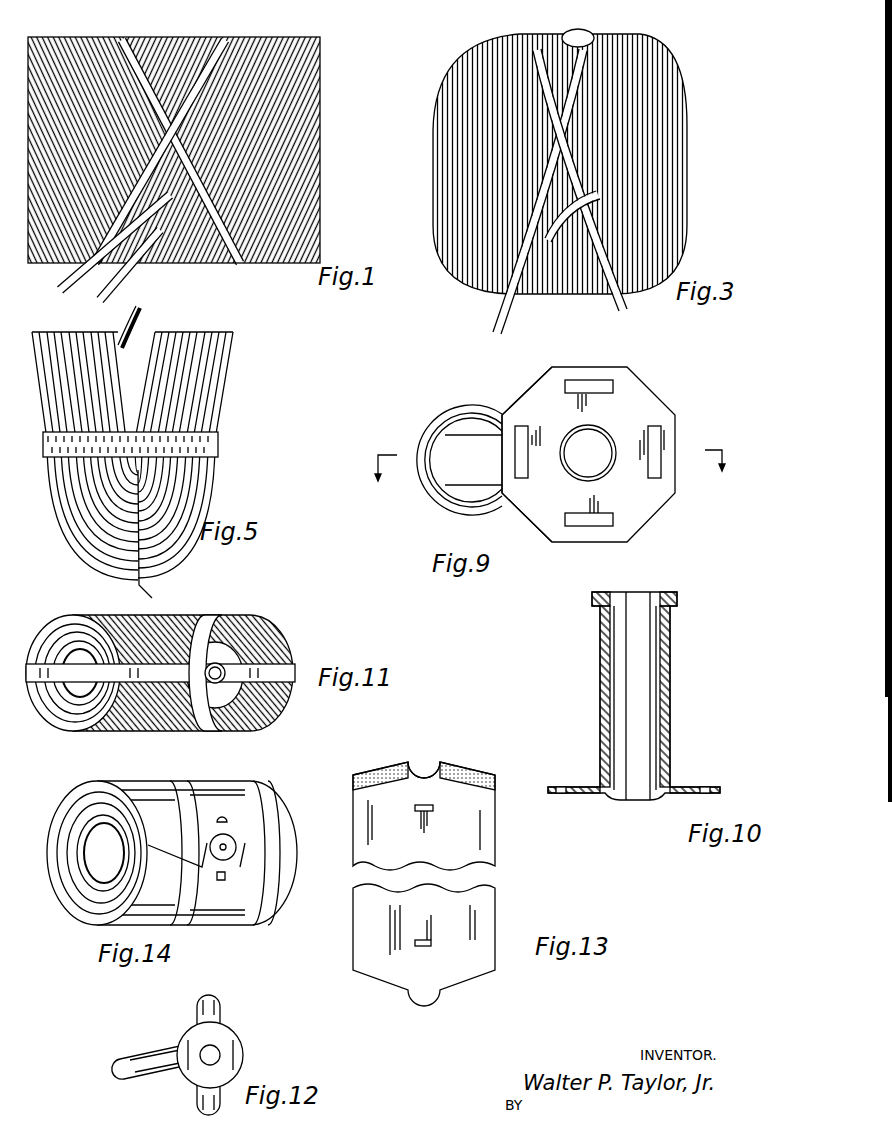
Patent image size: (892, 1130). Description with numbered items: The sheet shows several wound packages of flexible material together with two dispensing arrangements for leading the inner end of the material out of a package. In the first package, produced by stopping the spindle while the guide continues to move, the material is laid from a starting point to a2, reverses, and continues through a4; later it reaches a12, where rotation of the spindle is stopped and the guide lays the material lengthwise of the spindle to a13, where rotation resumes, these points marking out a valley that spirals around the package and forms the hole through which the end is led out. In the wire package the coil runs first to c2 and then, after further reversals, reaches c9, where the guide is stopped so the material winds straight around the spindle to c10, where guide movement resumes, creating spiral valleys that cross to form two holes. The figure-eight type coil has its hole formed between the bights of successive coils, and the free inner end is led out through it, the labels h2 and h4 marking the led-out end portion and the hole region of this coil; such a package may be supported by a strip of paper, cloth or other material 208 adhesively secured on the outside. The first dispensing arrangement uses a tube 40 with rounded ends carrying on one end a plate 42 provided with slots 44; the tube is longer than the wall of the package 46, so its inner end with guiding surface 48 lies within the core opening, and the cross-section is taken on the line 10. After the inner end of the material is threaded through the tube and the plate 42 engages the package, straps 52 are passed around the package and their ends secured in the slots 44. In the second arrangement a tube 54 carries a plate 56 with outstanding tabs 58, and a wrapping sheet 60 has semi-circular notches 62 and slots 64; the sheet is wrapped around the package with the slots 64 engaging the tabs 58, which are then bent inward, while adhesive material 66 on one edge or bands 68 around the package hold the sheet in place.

In FIG. 1, the winding point a12 is at (180, 147).
In FIG. 1, the winding point a13 is at (187, 143).
In FIG. 1, the winding point a2 is at (70, 287).
In FIG. 1, the winding point a4 is at (213, 265).
In FIG. 3, the winding point c2 is at (563, 195).
In FIG. 3, the winding point c9 is at (580, 222).
In FIG. 3, the winding point c10 is at (547, 297).
In FIG. 5, the supporting strip 208 is at (220, 443).
In FIG. 5, the twisted strand end h2 is at (137, 318).
In FIG. 5, the twisted strand end h4 is at (140, 338).
In FIG. 9, the tube 40 is at (490, 500).
In FIG. 10, the tube 40 is at (663, 690).
In FIG. 9, the plate 42 is at (543, 402).
In FIG. 10, the plate 42 is at (580, 795).
In FIG. 9, the slots 44 is at (600, 385).
In FIG. 10, the slots 44 is at (563, 793).
In FIG. 11, the slots 44 is at (175, 622).
In FIG. 10, the guiding surface 48 is at (683, 597).
In FIG. 9, the section line 10 is at (548, 477).
In FIG. 11, the package 46 is at (255, 628).
In FIG. 11, the straps 52 is at (272, 672).
In FIG. 14, the wrapping sheet 60 is at (135, 785).
In FIG. 13, the wrapping sheet 60 is at (478, 800).
In FIG. 14, the bands 68 is at (233, 783).
In FIG. 14, the tabs 58 is at (225, 822).
In FIG. 12, the tabs 58 is at (208, 1005).
In FIG. 14, the plate 56 is at (235, 845).
In FIG. 12, the plate 56 is at (230, 1035).
In FIG. 14, the tube 54 is at (238, 850).
In FIG. 12, the tube 54 is at (150, 1073).
In FIG. 13, the adhesive material 66 is at (384, 766).
In FIG. 13, the semi-circular notches 62 is at (424, 770).
In FIG. 13, the slots 64 is at (432, 943).